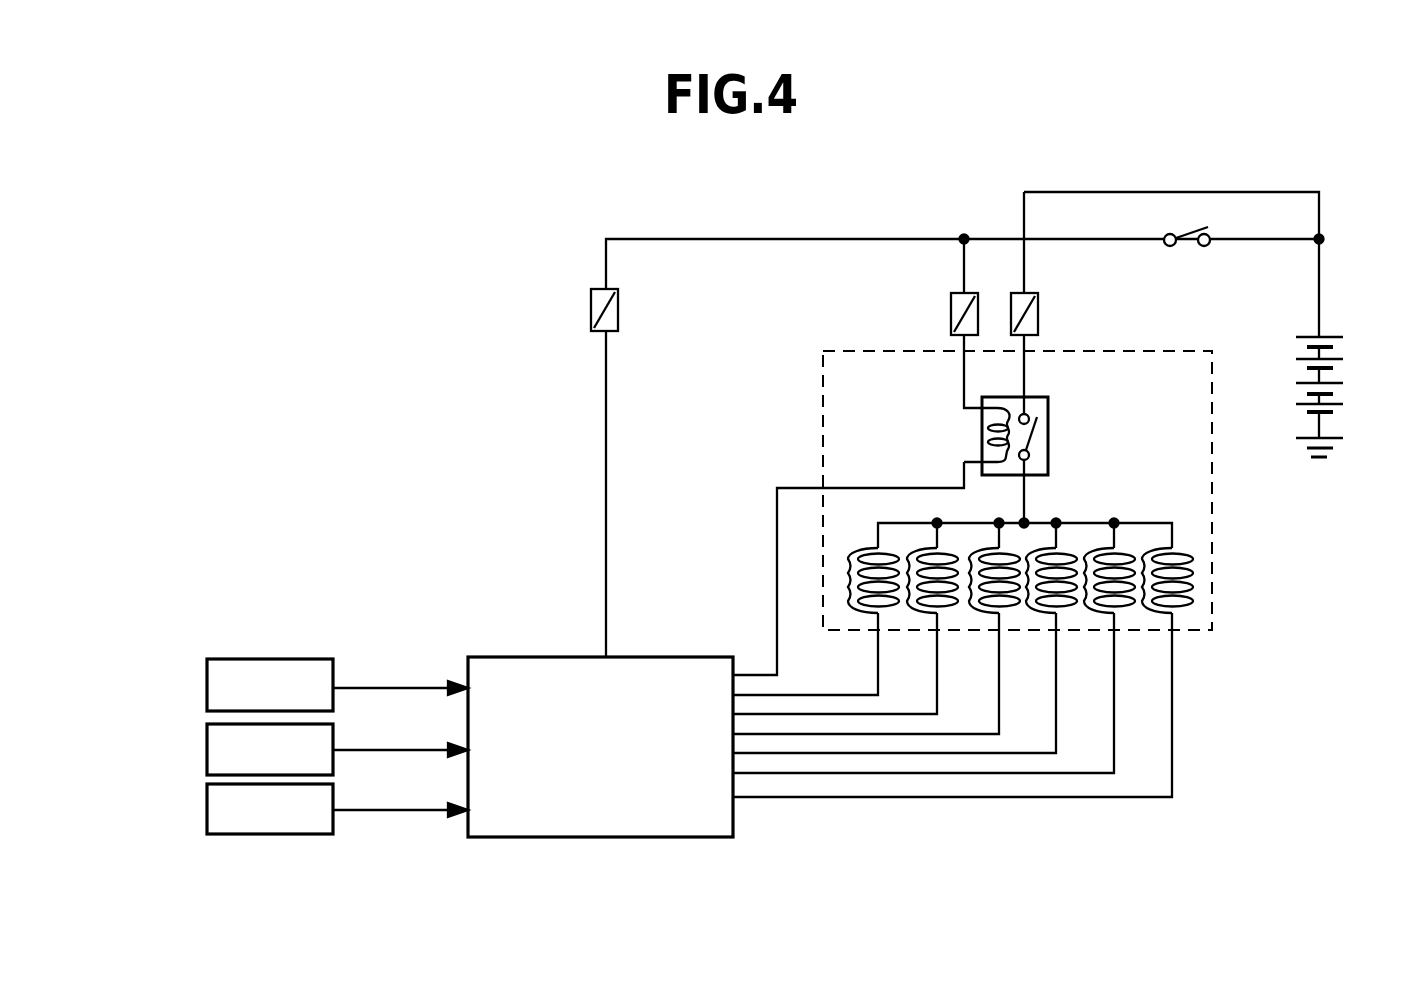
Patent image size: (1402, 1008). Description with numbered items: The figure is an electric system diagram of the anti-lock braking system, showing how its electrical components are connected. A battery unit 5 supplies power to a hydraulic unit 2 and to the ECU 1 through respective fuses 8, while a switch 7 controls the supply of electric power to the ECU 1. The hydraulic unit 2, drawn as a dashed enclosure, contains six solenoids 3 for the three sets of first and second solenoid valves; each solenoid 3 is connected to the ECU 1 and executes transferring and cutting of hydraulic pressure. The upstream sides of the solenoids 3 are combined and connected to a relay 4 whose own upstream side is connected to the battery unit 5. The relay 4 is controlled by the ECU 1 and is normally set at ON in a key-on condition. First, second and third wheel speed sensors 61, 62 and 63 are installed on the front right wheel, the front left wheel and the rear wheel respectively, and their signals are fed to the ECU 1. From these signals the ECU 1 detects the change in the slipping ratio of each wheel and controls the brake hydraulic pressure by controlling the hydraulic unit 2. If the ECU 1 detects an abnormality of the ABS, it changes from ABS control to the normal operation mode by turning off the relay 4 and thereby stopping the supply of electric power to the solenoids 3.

The ECU 1 is at (650, 820).
The hydraulic unit 2 is at (1205, 578).
The solenoids 3 is at (1153, 535).
The relay 4 is at (1048, 450).
The battery unit 5 is at (1332, 335).
The switch 7 is at (1190, 240).
The fuses 8 is at (590, 305).
The first wheel speed sensor 61 is at (207, 686).
The second wheel speed sensor 62 is at (207, 750).
The third wheel speed sensor 63 is at (207, 808).